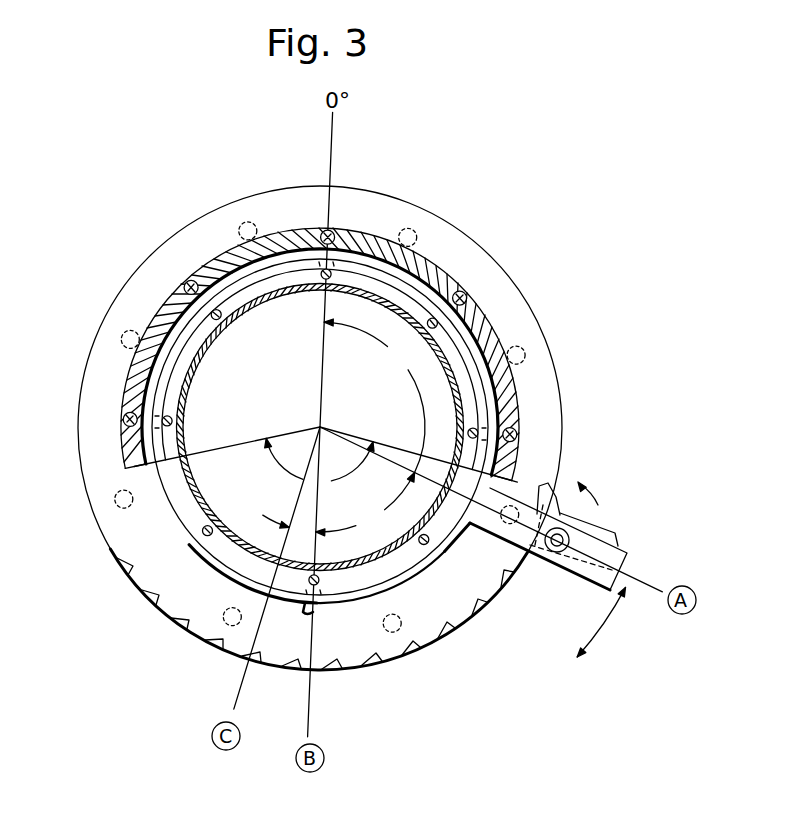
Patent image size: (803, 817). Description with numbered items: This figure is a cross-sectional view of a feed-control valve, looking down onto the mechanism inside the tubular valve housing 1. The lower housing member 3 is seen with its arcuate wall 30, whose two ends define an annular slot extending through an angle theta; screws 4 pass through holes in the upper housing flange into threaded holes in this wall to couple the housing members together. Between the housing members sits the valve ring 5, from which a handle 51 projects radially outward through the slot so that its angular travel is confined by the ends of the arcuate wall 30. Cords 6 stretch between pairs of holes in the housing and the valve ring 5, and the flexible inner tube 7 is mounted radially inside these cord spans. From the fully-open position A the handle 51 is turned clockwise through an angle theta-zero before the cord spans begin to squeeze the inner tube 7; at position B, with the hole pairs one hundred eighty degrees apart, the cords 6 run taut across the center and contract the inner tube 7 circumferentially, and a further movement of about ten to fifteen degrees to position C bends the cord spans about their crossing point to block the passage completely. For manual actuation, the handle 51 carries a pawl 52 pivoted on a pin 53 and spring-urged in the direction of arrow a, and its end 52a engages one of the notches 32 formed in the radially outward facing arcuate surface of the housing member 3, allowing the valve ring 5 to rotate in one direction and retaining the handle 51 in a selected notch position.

The valve housing 1 is at (192, 222).
The lower housing member 3 is at (88, 463).
The screws 4 is at (188, 282).
The valve ring 5 is at (182, 518).
The cord 6 is at (290, 250).
The inner tube 7 is at (190, 383).
The arcuate wall 30 is at (357, 226).
The notches 32 is at (290, 668).
The handle 51 is at (590, 590).
The pawl 52 is at (617, 540).
The end of pawl 52a is at (548, 490).
The pin 53 is at (556, 553).